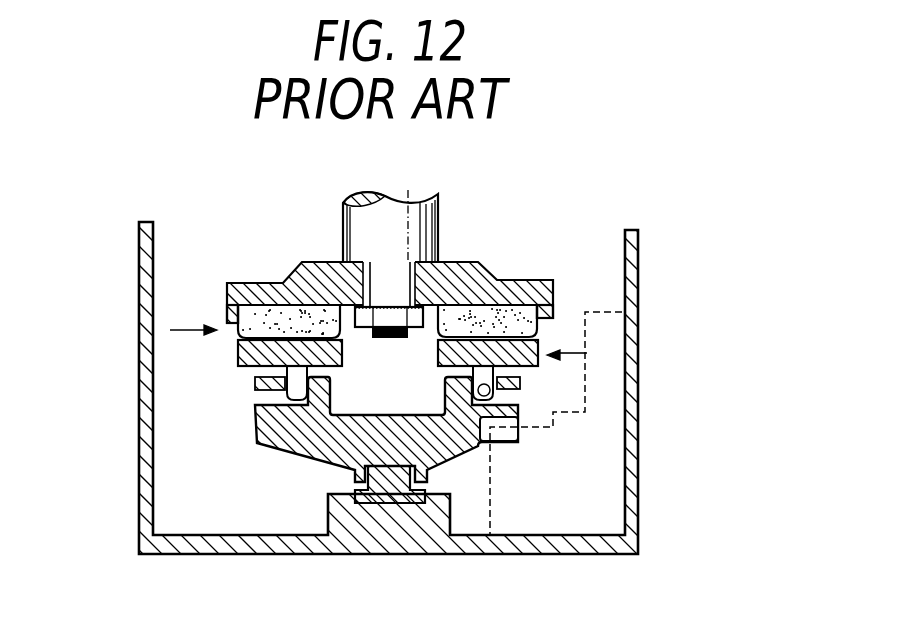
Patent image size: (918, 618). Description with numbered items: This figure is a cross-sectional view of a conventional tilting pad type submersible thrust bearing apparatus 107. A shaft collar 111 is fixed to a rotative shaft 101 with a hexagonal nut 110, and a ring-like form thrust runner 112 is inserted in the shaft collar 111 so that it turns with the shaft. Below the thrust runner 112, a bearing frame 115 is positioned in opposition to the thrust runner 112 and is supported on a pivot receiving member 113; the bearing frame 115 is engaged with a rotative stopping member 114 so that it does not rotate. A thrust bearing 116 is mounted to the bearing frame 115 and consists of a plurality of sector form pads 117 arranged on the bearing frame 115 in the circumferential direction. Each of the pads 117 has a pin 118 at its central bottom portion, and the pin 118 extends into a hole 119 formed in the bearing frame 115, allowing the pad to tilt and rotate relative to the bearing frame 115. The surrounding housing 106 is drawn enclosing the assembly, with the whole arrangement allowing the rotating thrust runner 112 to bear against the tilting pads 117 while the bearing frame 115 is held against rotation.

The rotative shaft 101 is at (350, 225).
The housing 106 is at (633, 297).
The tilting pad type submersible thrust bearing apparatus 107 is at (172, 330).
The hexagonal nut 110 is at (435, 305).
The shaft collar 111 is at (312, 268).
The thrust runner 112 is at (263, 310).
The pivot receiving member 113 is at (396, 492).
The rotative stopping member 114 is at (600, 312).
The bearing frame 115 is at (297, 438).
The thrust bearing 116 is at (587, 353).
The sector form pads 117 is at (247, 355).
The pin 118 is at (292, 398).
The hole 119 is at (502, 425).